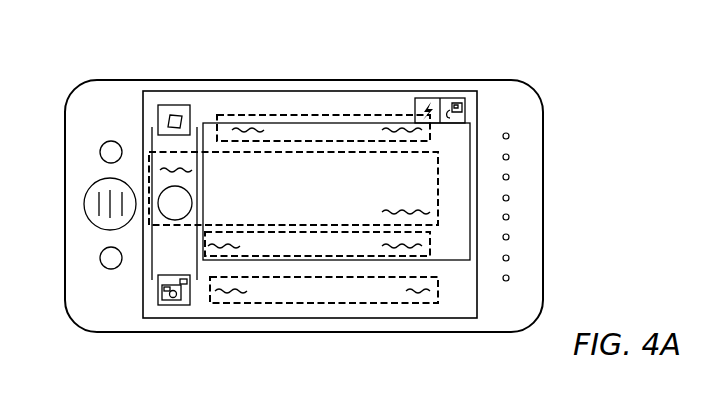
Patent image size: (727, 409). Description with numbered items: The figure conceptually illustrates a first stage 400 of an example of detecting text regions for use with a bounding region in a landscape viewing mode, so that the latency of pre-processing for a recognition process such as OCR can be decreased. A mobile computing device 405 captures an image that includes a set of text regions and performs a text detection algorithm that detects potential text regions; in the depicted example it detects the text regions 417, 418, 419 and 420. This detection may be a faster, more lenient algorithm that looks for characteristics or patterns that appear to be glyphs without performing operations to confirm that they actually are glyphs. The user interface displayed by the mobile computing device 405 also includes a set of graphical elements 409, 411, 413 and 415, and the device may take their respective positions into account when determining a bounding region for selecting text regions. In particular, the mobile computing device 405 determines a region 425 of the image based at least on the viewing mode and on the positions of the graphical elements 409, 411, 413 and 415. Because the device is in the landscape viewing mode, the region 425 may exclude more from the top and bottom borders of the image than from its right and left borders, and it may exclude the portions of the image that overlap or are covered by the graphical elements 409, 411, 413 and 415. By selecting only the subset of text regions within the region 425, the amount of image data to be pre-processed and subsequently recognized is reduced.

The first stage 400 is at (572, 113).
The mobile computing device 405 is at (131, 66).
The graphical element 409 is at (430, 99).
The graphical element 411 is at (172, 104).
The graphical element 413 is at (166, 201).
The graphical element 415 is at (173, 305).
The text region 417 is at (367, 114).
The text region 418 is at (438, 186).
The text region 419 is at (430, 244).
The text region 420 is at (413, 303).
The region 425 is at (447, 260).